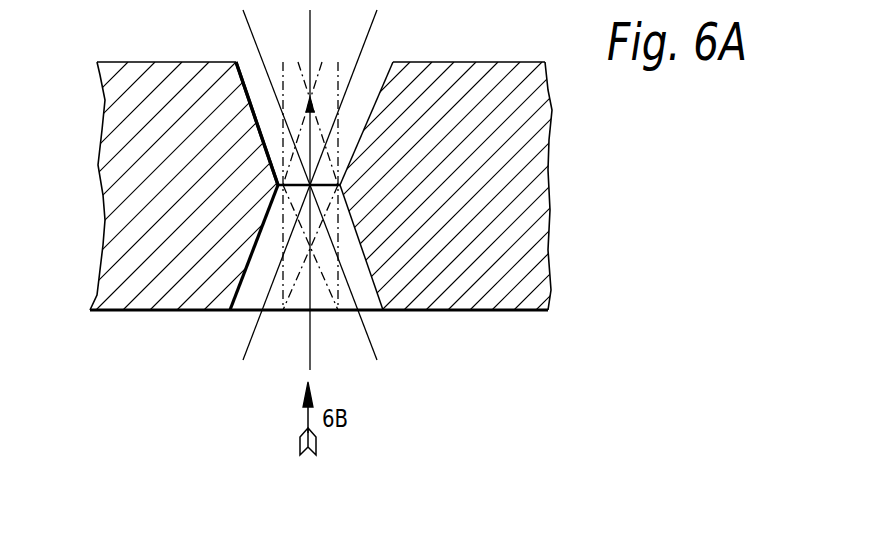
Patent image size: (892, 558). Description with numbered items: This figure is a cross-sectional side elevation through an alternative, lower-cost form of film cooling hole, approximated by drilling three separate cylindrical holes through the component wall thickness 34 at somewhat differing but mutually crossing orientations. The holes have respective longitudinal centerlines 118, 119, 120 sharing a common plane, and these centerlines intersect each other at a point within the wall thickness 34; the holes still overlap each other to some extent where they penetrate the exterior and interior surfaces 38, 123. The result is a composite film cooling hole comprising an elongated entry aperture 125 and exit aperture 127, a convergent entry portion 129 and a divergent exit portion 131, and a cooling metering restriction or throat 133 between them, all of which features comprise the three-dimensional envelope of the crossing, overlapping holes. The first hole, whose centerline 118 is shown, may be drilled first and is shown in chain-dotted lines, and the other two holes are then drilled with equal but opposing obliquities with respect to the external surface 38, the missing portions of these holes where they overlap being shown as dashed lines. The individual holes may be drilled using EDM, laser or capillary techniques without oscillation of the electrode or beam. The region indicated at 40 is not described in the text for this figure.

The component wall thickness 34 is at (533, 108).
The exterior surface 38 is at (508, 313).
The nozzle opening 40 is at (368, 77).
The longitudinal centerline 118 is at (308, 348).
The longitudinal centerline 119 is at (245, 347).
The longitudinal centerline 120 is at (368, 343).
The interior surface 123 is at (118, 60).
The entry aperture 125 is at (247, 60).
The exit aperture 127 is at (248, 311).
The convergent entry portion 129 is at (248, 100).
The divergent exit portion 131 is at (376, 282).
The cooling metering restriction or throat 133 is at (282, 186).